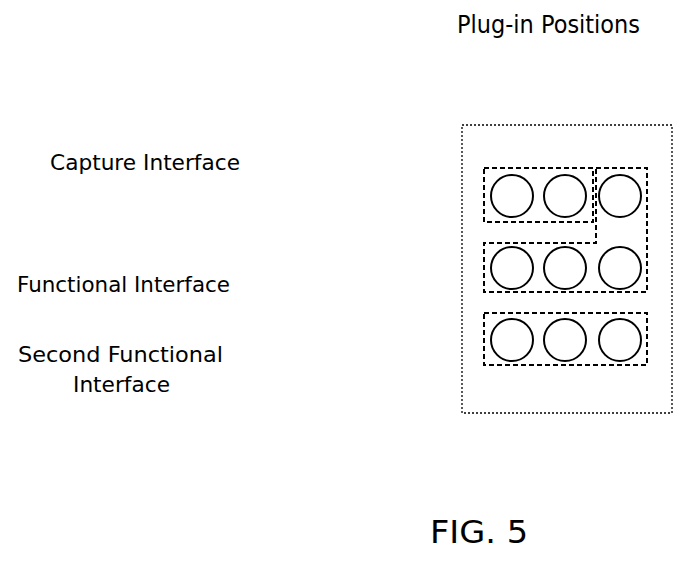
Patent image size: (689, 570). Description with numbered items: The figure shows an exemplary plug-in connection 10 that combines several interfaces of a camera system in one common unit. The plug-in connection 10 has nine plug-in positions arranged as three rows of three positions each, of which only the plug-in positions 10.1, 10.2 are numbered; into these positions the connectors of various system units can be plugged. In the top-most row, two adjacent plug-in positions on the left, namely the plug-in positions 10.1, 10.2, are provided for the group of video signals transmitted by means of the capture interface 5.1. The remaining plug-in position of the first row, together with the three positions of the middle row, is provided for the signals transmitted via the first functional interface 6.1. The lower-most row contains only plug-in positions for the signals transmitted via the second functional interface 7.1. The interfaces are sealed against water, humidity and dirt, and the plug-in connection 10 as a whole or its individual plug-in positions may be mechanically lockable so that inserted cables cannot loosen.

The plug-in connection 10 is at (460, 153).
The capture interface 5.1 is at (485, 206).
The first functional interface 6.1 is at (487, 250).
The second functional interface 7.1 is at (487, 328).
The plug-in position 10.1 is at (508, 193).
The plug-in position 10.2 is at (568, 188).